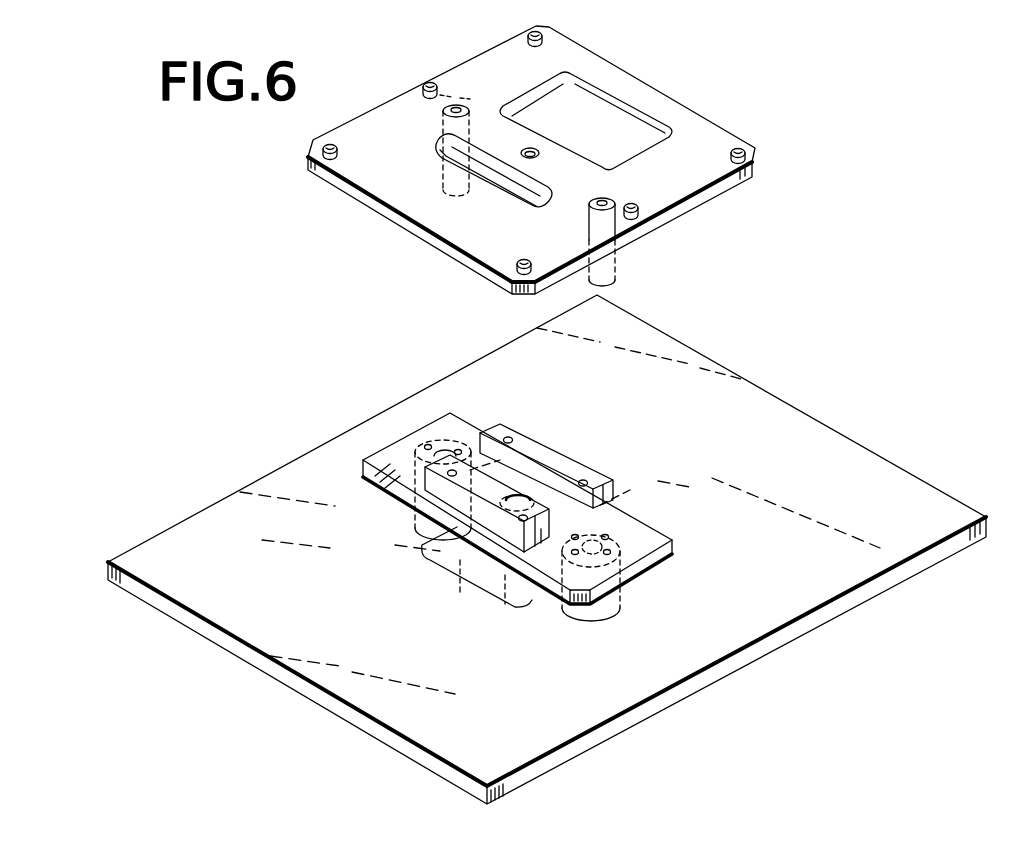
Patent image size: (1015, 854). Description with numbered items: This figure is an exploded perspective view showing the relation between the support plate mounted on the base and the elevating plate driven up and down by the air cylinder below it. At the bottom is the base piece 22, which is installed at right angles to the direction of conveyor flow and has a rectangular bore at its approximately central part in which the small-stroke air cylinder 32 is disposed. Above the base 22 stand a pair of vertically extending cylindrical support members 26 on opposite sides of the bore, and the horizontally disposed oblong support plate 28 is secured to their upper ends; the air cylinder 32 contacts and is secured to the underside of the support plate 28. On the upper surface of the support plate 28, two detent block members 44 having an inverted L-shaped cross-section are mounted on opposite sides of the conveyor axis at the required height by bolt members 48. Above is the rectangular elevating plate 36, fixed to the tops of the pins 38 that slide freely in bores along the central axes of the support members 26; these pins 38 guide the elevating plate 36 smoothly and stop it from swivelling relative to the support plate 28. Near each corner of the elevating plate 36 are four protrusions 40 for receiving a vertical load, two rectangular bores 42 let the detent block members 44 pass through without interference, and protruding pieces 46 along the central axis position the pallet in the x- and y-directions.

The base piece 22 is at (828, 452).
The cylindrical support members 26 is at (420, 524).
The support plate 28 is at (650, 546).
The air cylinder 32 is at (481, 578).
The elevating plate 36 is at (690, 190).
The pins 38 is at (614, 276).
The protrusions 40 is at (331, 144).
The rectangular bores 42 is at (625, 102).
The detent block members 44 is at (428, 488).
The protruding pieces 46 is at (428, 82).
The bolt members 48 is at (522, 438).